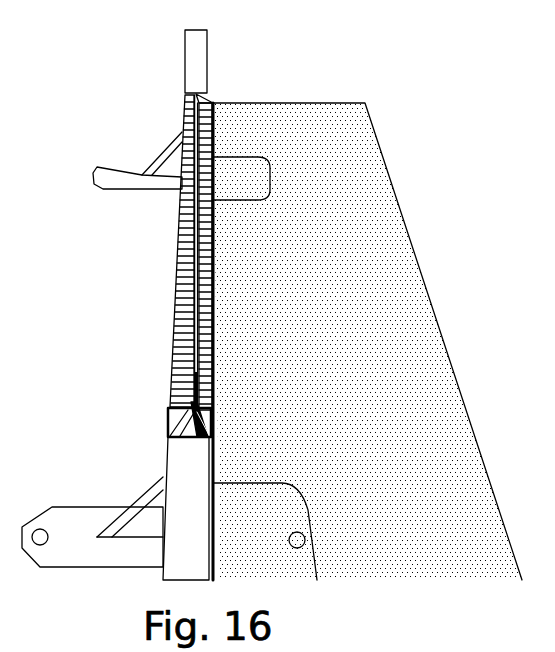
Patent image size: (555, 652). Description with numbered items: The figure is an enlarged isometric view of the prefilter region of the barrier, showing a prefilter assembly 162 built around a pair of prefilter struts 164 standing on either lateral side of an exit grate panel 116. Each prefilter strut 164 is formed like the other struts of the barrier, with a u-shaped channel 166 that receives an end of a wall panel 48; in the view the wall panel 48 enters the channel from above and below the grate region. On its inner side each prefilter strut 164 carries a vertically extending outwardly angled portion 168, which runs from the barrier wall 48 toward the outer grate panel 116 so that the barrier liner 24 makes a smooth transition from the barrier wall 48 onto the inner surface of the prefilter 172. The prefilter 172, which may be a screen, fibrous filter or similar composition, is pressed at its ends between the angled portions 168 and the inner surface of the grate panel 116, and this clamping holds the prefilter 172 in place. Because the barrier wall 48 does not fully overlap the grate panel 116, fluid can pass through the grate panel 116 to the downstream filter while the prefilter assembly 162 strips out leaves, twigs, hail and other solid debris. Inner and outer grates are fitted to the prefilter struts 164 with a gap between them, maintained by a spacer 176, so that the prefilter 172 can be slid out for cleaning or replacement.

The barrier liner 24 is at (417, 319).
The wall panel 48 is at (194, 52).
The exit grate panel 116 is at (139, 265).
The prefilter assembly 162 is at (139, 265).
The prefilter strut 164 is at (183, 90).
The u-shaped channel 166 is at (168, 410).
The outwardly angled portion 168 is at (213, 98).
The prefilter 172 is at (181, 196).
The spacer 176 is at (194, 108).